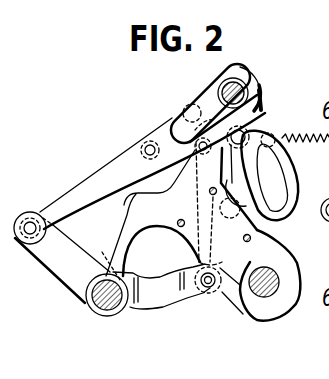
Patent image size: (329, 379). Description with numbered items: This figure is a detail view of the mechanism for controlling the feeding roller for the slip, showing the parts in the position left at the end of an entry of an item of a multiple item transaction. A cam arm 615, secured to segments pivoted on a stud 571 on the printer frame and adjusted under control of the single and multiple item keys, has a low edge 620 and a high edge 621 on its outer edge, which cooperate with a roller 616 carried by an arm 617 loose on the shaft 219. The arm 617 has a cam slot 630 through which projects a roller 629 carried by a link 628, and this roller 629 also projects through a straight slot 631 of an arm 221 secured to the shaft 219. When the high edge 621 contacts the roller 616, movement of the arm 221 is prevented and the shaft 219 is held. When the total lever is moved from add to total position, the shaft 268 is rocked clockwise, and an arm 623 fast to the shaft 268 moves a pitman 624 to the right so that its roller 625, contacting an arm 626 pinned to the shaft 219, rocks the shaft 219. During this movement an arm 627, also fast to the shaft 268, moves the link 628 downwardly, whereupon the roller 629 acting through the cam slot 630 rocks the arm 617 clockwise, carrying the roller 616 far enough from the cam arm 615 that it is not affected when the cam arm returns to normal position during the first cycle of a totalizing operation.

The arm 626 is at (172, 118).
The shaft 219 is at (250, 92).
The roller 629 is at (257, 126).
The cam slot 630 is at (272, 173).
The arm 617 is at (289, 190).
The arm 221 is at (269, 224).
The roller 616 is at (191, 167).
The straight slot 631 is at (214, 212).
The link 628 is at (231, 240).
The stud 571 is at (268, 292).
The cam arm 615 is at (246, 296).
The arm 627 is at (160, 302).
The shaft 268 is at (108, 314).
The arm 623 is at (58, 270).
The high edge 621 is at (100, 249).
The pitman 624 is at (75, 194).
The roller 625 is at (145, 158).
The low edge 620 is at (177, 177).